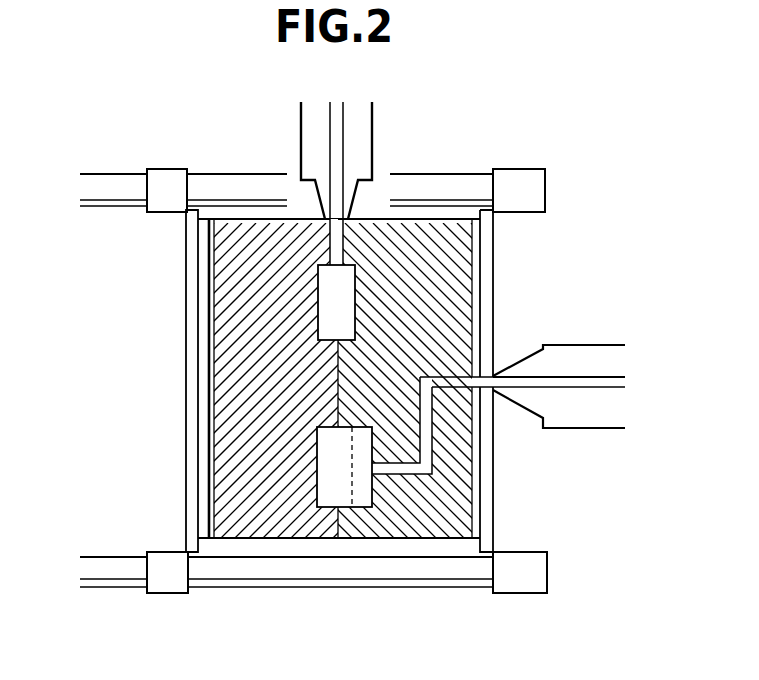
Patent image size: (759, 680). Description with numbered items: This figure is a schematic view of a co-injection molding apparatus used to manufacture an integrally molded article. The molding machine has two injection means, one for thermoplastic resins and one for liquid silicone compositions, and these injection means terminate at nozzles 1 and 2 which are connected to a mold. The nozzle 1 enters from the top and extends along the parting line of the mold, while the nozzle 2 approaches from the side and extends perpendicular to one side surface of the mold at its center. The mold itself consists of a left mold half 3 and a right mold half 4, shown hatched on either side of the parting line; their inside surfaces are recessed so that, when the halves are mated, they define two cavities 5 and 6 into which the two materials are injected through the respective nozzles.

The nozzle 1 is at (342, 138).
The nozzle 2 is at (577, 383).
The left mold half 3 is at (247, 290).
The right mold half 4 is at (435, 518).
The cavity 5 is at (352, 301).
The cavity 6 is at (363, 491).